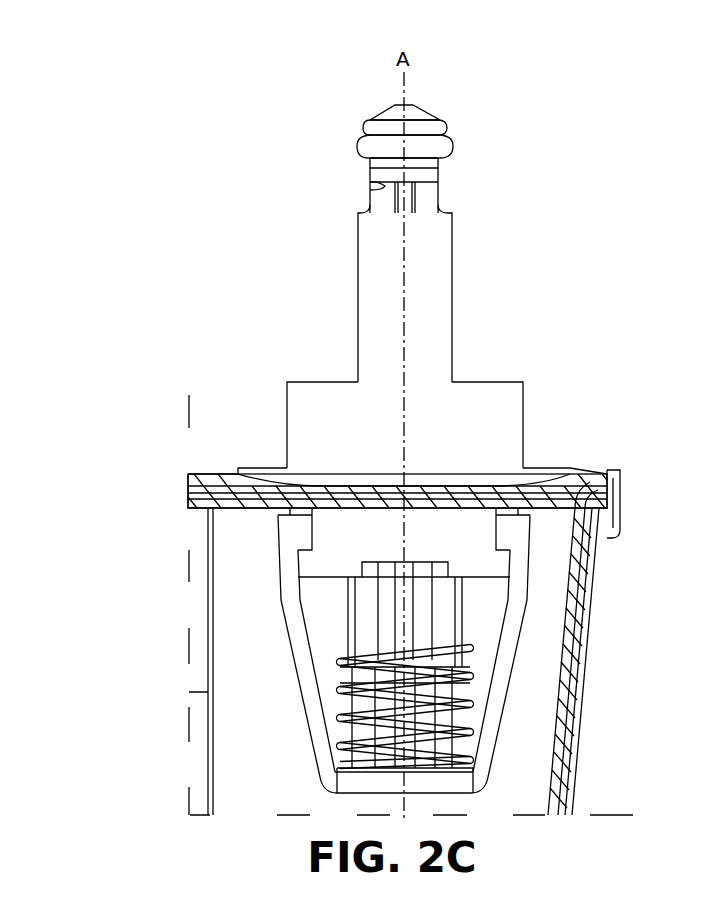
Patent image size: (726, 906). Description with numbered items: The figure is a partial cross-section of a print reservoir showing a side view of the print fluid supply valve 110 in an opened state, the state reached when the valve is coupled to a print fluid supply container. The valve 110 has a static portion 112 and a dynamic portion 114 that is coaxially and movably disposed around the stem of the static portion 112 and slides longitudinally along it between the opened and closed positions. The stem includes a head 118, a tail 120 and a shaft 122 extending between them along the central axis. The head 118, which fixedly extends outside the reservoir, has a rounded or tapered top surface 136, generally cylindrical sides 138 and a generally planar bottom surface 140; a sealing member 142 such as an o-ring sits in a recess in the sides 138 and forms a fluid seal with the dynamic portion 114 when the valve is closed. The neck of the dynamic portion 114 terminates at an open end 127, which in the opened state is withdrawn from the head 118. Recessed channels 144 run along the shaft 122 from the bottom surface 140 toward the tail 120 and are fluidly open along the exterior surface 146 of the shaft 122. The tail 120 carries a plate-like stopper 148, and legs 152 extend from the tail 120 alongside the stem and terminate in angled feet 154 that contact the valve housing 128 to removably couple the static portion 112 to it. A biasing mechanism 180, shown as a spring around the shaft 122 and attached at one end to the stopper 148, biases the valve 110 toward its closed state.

The print fluid supply valve 110 is at (244, 142).
The static portion 112 is at (447, 158).
The dynamic portion 114 is at (432, 311).
The head 118 is at (372, 123).
The tail 120 is at (360, 782).
The shaft 122 is at (405, 618).
The open end 127 is at (450, 211).
The valve housing 128 is at (507, 432).
The top surface 136 is at (408, 107).
The sides 138 is at (441, 126).
The bottom surface 140 is at (370, 182).
The sealing member 142 is at (358, 148).
The recessed channels 144 is at (385, 196).
The exterior surface 146 is at (370, 192).
The stopper 148 is at (452, 780).
The legs 152 is at (298, 628).
The feet 154 is at (290, 526).
The biasing mechanism 180 is at (463, 712).